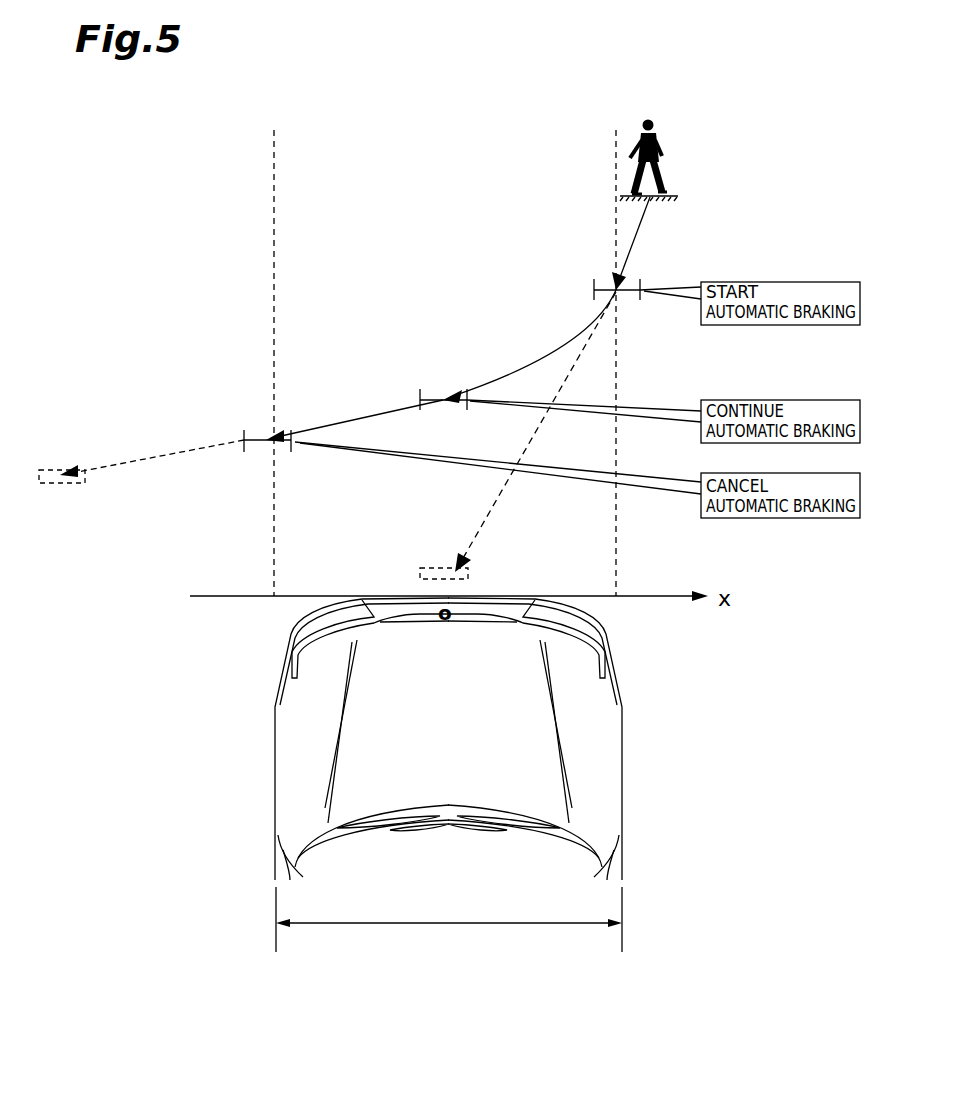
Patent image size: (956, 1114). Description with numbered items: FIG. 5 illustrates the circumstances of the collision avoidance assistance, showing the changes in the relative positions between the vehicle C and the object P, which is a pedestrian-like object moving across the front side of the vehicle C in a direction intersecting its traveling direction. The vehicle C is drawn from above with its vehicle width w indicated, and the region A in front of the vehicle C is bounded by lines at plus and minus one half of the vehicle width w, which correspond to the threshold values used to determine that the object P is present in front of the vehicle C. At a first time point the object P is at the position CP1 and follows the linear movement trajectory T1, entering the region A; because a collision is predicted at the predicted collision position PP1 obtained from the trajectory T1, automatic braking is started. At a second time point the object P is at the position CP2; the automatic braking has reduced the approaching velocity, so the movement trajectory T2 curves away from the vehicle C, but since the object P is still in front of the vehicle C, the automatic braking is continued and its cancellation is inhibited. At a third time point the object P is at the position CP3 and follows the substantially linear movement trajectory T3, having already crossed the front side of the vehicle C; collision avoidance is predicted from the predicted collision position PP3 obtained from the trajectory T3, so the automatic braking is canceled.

The object P is at (660, 138).
The linear movement trajectory T1 is at (636, 230).
The curved movement trajectory T2 is at (525, 362).
The linear movement trajectory T3 is at (324, 418).
The position of object at first time point CP1 is at (598, 284).
The position of object at second time point CP2 is at (426, 388).
The position of object at third time point CP3 is at (252, 425).
The predicted collision position PP1 is at (436, 566).
The predicted collision position PP3 is at (50, 468).
The region in front of vehicle A is at (620, 516).
The vehicle C is at (605, 720).
The vehicle width w is at (450, 926).